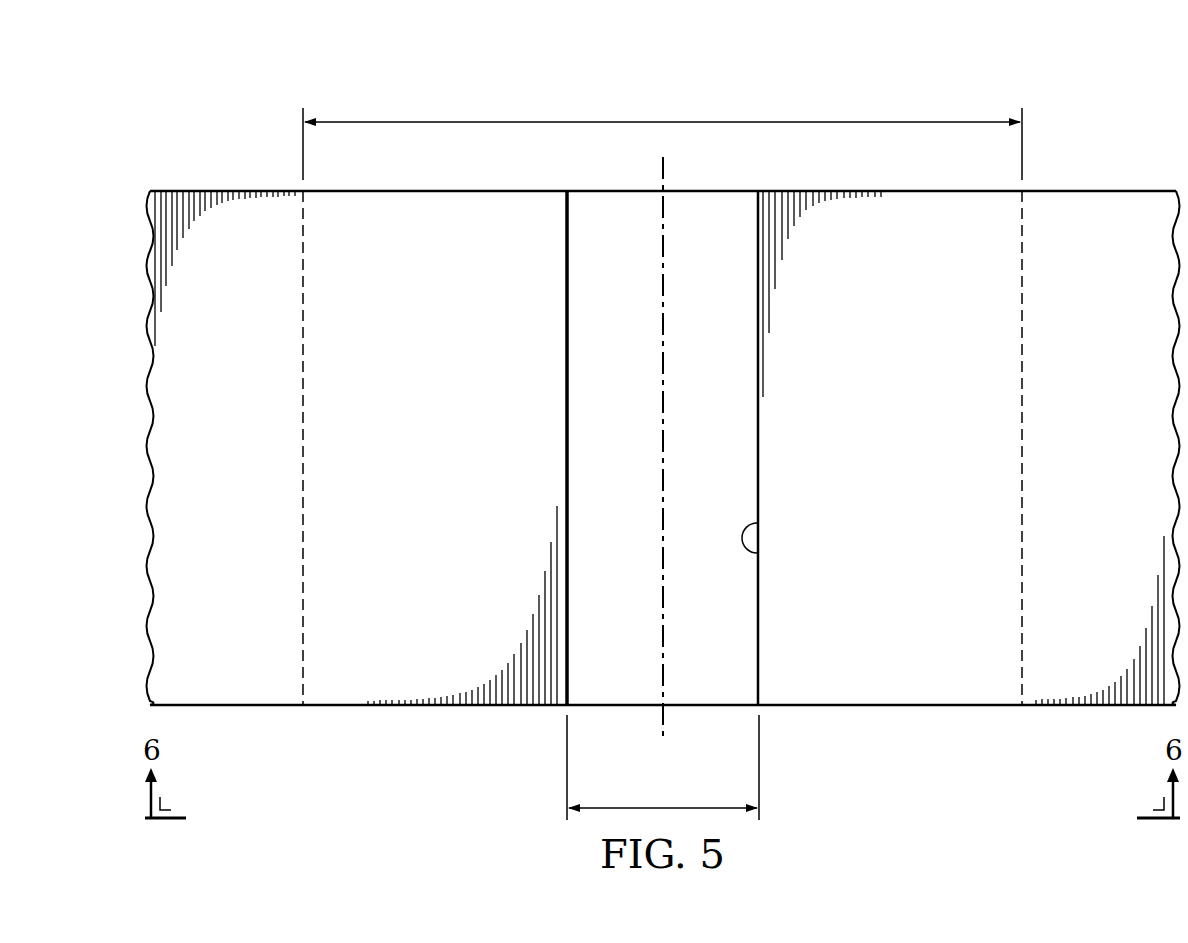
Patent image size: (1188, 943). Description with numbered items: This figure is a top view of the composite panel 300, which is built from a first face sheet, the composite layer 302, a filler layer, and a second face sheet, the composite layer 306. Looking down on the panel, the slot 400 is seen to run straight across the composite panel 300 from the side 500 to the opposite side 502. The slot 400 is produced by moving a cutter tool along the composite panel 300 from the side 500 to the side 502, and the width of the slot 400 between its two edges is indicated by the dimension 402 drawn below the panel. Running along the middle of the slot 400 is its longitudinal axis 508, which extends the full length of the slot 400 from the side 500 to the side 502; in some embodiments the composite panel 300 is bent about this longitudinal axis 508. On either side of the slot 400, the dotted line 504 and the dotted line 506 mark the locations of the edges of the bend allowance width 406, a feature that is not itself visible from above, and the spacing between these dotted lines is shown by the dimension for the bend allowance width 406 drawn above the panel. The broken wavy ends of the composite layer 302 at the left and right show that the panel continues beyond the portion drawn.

The composite panel 300 is at (372, 70).
The composite layer 302 is at (452, 465).
The composite layer 306 is at (634, 217).
The slot 400 is at (757, 553).
The weld width 402 is at (663, 807).
The bend allowance width 406 is at (662, 121).
The side 500 is at (710, 190).
The side 502 is at (835, 707).
The dotted line 504 is at (302, 322).
The dotted line 506 is at (1023, 308).
The longitudinal axis 508 is at (665, 413).